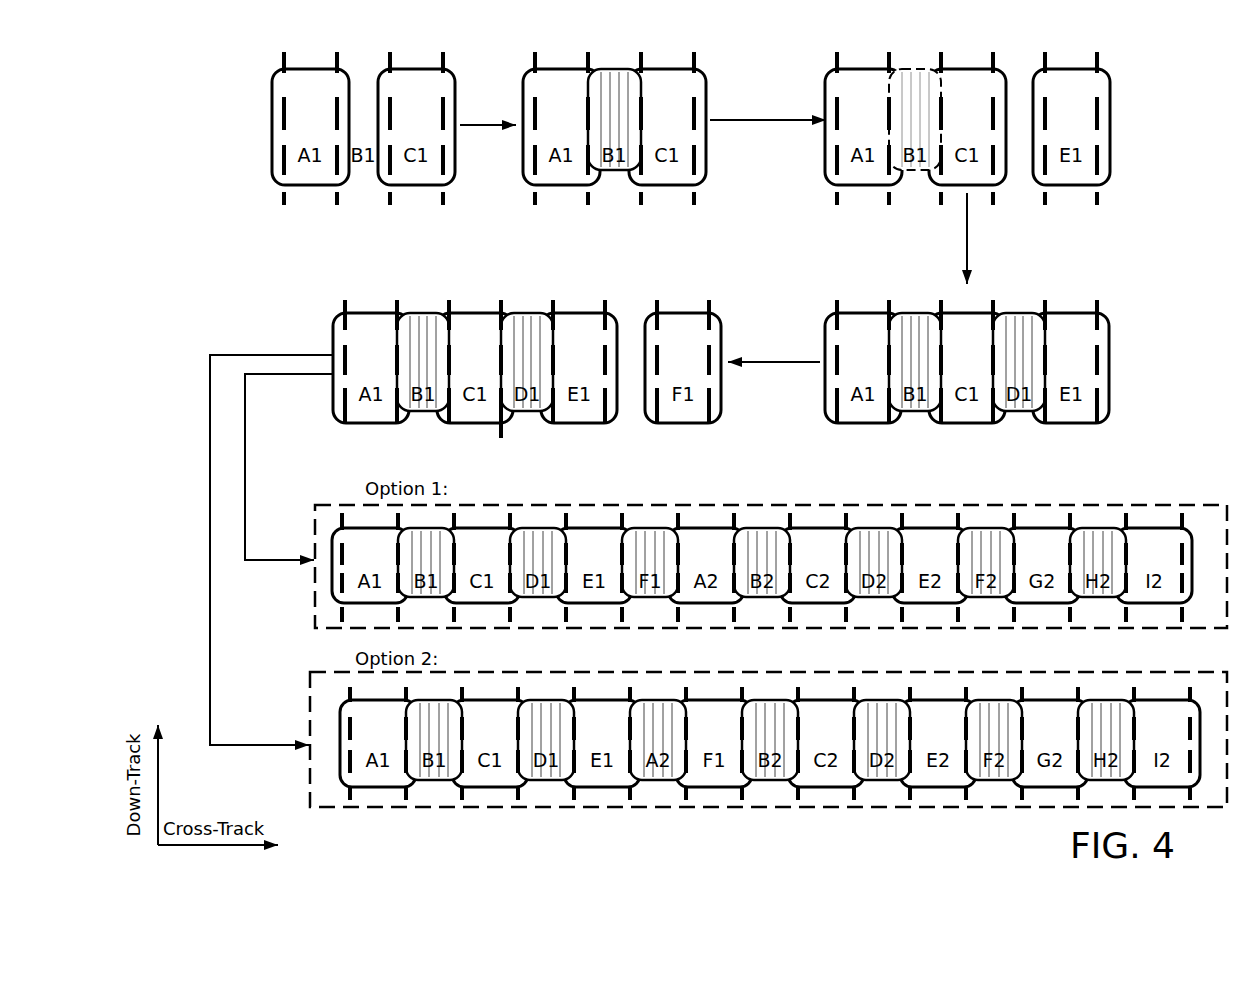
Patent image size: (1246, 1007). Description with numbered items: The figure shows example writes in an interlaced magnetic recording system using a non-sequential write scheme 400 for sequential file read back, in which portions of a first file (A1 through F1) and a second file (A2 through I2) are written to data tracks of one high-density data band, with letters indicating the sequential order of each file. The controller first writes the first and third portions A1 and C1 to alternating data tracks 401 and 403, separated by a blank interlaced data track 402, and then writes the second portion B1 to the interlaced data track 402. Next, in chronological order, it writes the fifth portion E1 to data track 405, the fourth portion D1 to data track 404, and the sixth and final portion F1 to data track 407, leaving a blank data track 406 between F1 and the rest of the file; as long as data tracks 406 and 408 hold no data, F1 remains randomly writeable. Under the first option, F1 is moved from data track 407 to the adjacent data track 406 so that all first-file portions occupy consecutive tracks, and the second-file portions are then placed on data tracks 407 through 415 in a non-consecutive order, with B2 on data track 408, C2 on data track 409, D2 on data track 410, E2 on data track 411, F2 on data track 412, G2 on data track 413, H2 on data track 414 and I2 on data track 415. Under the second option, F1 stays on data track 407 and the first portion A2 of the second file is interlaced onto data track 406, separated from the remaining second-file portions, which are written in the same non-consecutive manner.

The non-sequential write scheme 400 is at (233, 118).
The data track 401 is at (586, 417).
The interlaced data track 402 is at (639, 417).
The data track 403 is at (691, 417).
The data track 404 is at (773, 417).
The data track 405 is at (825, 417).
The blank data track 406 is at (872, 540).
The data track 407 is at (699, 540).
The data track 408 is at (753, 540).
The data track 409 is at (822, 653).
The data track 410 is at (878, 653).
The data track 411 is at (934, 653).
The data track 412 is at (990, 653).
The data track 413 is at (1046, 653).
The data track 414 is at (1102, 653).
The data track 415 is at (1158, 653).